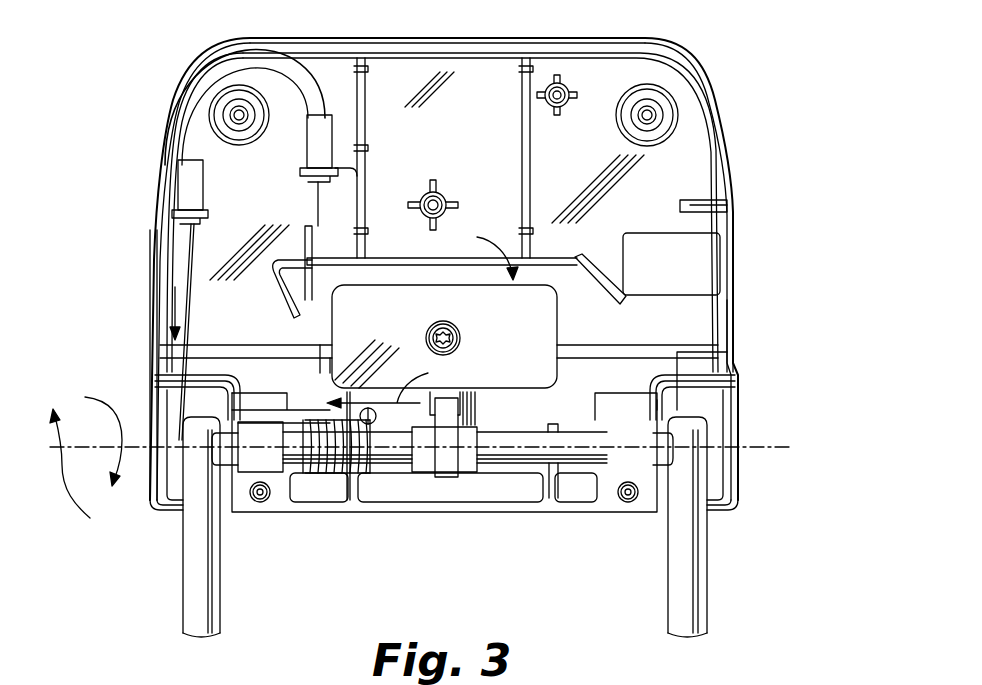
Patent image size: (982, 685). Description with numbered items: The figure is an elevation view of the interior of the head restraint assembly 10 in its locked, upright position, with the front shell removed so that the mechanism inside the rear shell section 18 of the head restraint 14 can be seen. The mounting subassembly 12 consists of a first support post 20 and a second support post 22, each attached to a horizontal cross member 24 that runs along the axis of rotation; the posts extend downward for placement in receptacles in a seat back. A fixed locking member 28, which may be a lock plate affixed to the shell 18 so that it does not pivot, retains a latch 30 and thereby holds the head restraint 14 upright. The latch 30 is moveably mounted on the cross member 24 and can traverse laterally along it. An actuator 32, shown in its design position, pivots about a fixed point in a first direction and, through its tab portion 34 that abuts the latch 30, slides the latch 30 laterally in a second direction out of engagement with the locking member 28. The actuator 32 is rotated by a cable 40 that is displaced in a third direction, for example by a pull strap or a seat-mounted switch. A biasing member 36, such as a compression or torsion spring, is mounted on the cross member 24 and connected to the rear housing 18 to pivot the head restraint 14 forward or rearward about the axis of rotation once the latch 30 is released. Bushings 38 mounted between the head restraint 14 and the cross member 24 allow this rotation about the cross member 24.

The head restraint assembly 10 is at (782, 252).
The mounting subassembly 12 is at (541, 568).
The head restraint 14 is at (139, 265).
The shell section 18 is at (720, 127).
The first support post 20 is at (173, 560).
The second support post 22 is at (710, 549).
The cross member 24 is at (565, 470).
The fixed locking member 28 is at (737, 333).
The latch 30 is at (430, 477).
The actuator 32 is at (606, 283).
The tab portion 34 is at (470, 412).
The biasing member 36 is at (320, 473).
The bushings 38 is at (265, 502).
The cable 40 is at (185, 255).